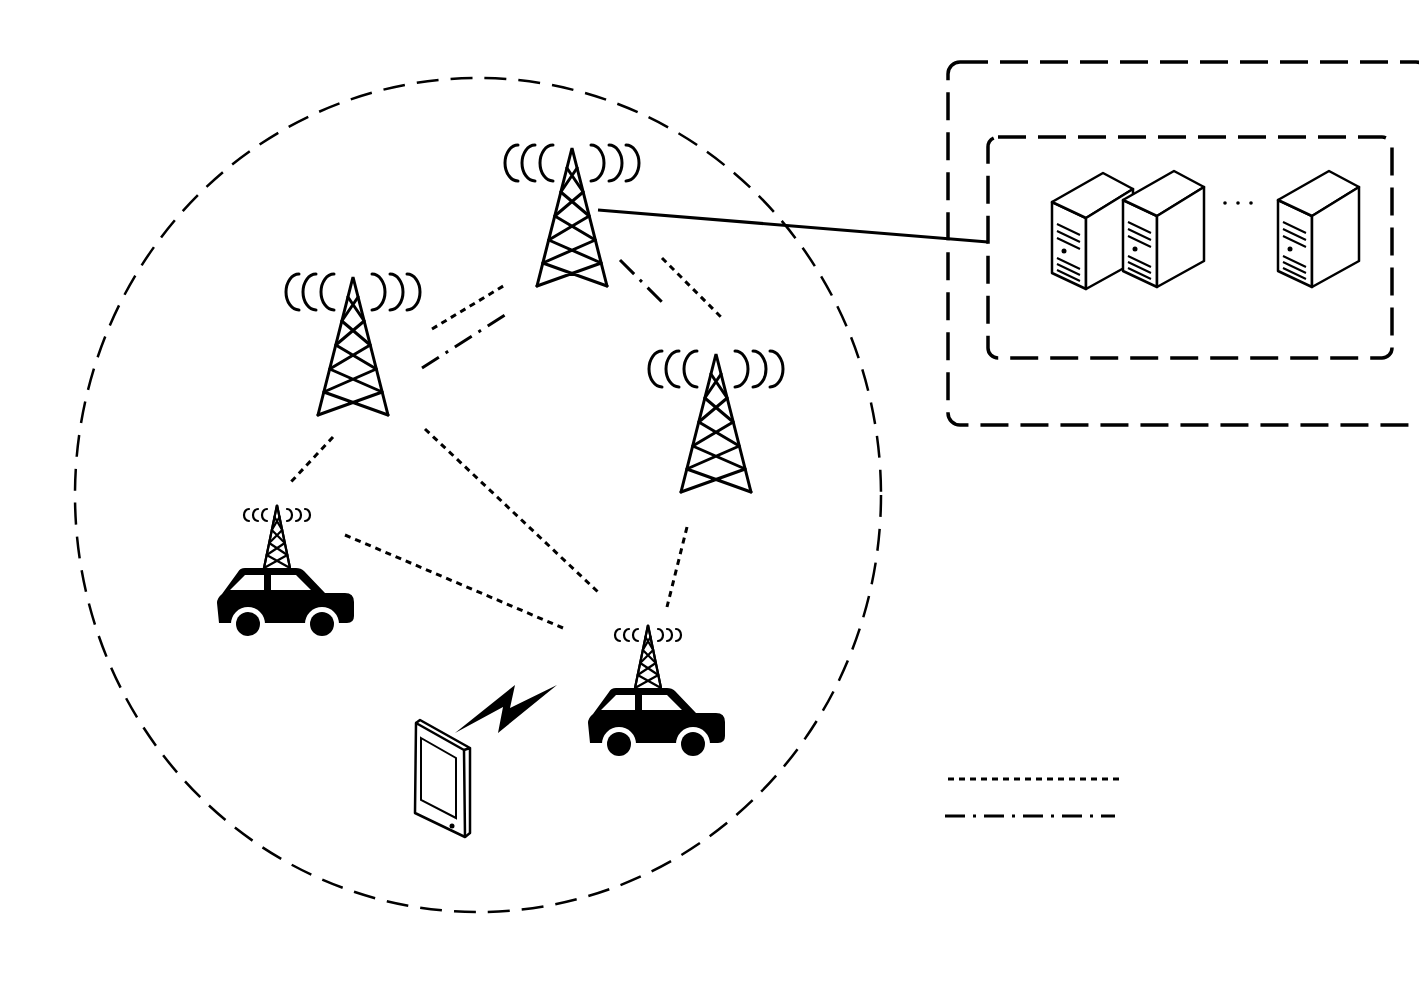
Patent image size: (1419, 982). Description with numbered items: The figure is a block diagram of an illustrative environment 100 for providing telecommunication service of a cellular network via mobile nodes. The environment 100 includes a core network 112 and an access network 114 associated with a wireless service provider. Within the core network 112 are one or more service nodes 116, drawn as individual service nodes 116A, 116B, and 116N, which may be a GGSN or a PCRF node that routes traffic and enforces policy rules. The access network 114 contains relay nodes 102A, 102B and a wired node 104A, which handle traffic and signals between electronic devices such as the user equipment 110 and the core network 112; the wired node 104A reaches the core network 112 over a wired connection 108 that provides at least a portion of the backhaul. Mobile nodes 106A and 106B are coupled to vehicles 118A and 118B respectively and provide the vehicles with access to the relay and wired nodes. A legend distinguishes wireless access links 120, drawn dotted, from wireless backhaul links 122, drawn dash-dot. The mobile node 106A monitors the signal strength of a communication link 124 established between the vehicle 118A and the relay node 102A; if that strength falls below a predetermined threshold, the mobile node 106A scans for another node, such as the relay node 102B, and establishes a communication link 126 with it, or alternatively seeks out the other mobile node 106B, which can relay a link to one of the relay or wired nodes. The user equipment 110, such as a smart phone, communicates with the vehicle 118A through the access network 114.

The environment 100 is at (144, 70).
The relay node 102A is at (353, 275).
The relay node 102B is at (716, 352).
The wired node 104A is at (572, 146).
The mobile node 106A is at (678, 628).
The mobile node 106B is at (253, 505).
The wired connection 108 is at (890, 228).
The user equipment 110 is at (422, 724).
The core network 112 is at (1295, 96).
The access network 114 is at (497, 901).
The service nodes 116 is at (1292, 169).
The service node 116A is at (1087, 290).
The service node 116B is at (1175, 283).
The service node 116N is at (1345, 267).
The vehicle 118A is at (590, 745).
The vehicle 118B is at (224, 622).
The wireless access link 120 is at (1377, 796).
The wireless backhaul link 122 is at (1377, 826).
The communication link 124 is at (490, 490).
The communication link 126 is at (678, 556).